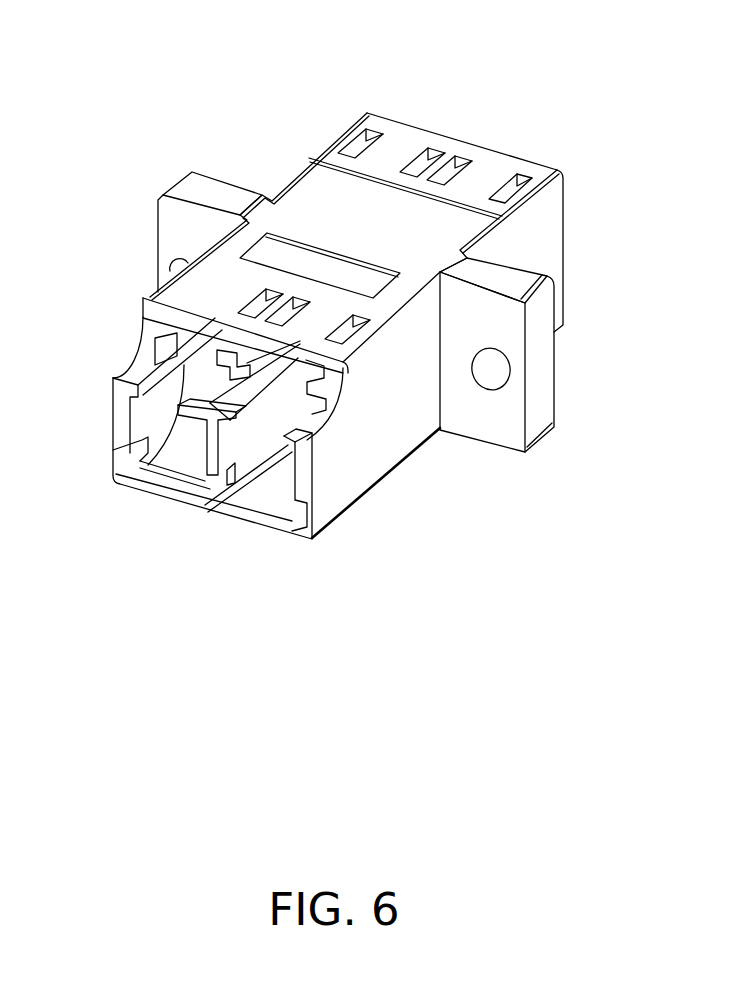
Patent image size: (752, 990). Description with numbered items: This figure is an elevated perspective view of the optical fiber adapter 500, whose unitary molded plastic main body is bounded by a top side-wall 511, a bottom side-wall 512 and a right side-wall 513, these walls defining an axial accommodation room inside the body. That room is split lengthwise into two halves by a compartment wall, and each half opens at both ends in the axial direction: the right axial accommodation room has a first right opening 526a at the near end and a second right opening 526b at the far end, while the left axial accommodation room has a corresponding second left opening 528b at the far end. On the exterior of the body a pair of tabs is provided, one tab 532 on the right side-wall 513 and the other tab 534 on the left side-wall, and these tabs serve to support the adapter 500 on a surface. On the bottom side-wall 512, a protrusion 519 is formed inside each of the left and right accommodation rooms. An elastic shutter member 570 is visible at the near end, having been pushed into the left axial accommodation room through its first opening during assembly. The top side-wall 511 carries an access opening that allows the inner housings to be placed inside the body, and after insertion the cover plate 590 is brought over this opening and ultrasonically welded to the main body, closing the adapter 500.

The optical fiber adapter 500 is at (118, 85).
The cover plate 590 is at (362, 203).
The second left opening 528b is at (397, 118).
The second right opening 526b is at (505, 150).
The tab 534 is at (227, 190).
The top side-wall 511 is at (147, 297).
The shutter member 570 is at (187, 395).
The tab 532 is at (538, 357).
The right side-wall 513 is at (352, 422).
The protrusion 519 is at (290, 462).
The first right opening 526a is at (270, 483).
The bottom side-wall 512 is at (280, 528).